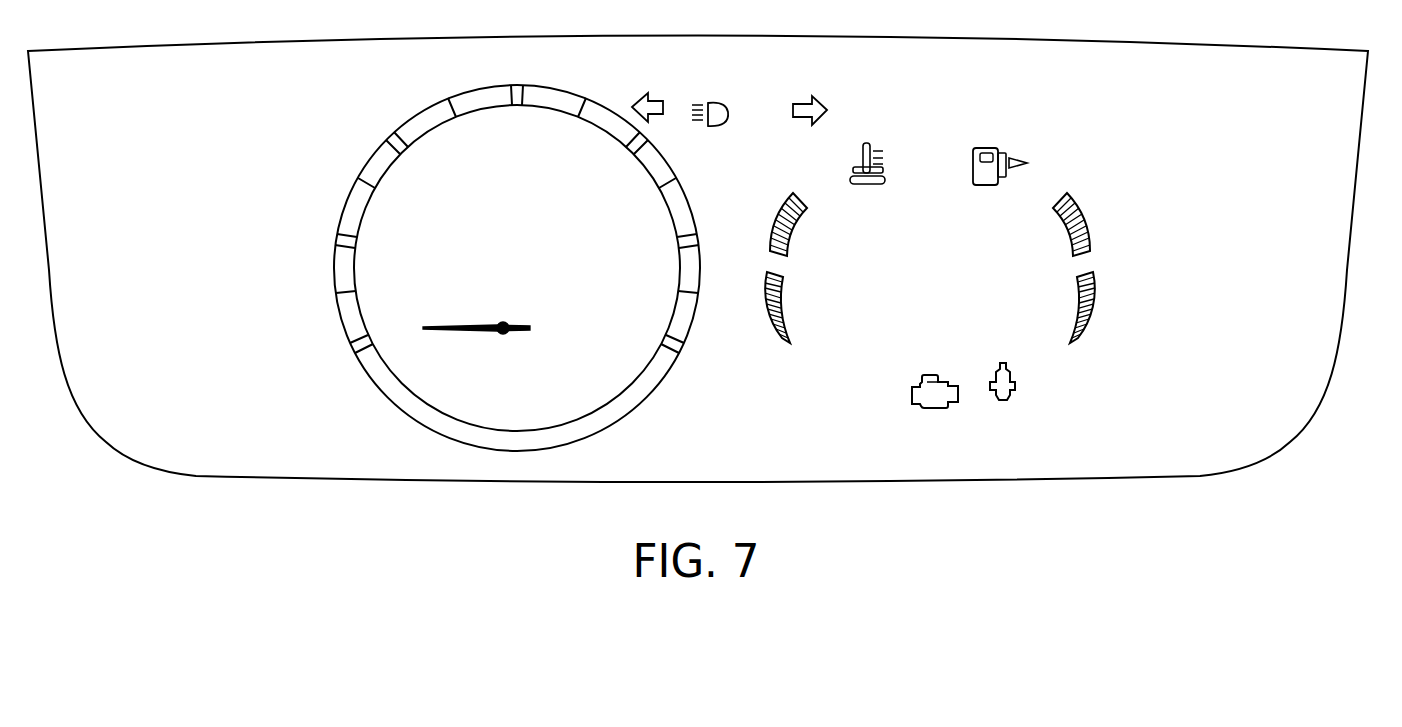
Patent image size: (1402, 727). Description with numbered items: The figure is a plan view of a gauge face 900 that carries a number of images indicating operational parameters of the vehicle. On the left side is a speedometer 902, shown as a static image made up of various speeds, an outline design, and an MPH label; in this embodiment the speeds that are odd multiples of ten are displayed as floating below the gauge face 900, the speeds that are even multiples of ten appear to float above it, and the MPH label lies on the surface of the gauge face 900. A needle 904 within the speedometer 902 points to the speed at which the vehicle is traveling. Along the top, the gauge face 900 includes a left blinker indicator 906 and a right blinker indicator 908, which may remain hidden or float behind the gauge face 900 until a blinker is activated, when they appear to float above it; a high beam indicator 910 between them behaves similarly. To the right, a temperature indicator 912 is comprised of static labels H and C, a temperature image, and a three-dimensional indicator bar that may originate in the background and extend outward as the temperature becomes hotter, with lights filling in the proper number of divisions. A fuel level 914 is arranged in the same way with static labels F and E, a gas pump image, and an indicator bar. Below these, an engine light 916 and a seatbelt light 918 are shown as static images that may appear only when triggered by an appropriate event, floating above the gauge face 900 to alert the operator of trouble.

The gauge face 900 is at (1338, 93).
The speedometer 902 is at (383, 125).
The needle 904 is at (485, 340).
The left blinker indicator 906 is at (639, 104).
The right blinker indicator 908 is at (817, 108).
The high beam indicator 910 is at (712, 110).
The temperature indicator 912 is at (845, 277).
The fuel level 914 is at (1030, 277).
The engine light 916 is at (933, 408).
The seatbelt light 918 is at (1007, 398).